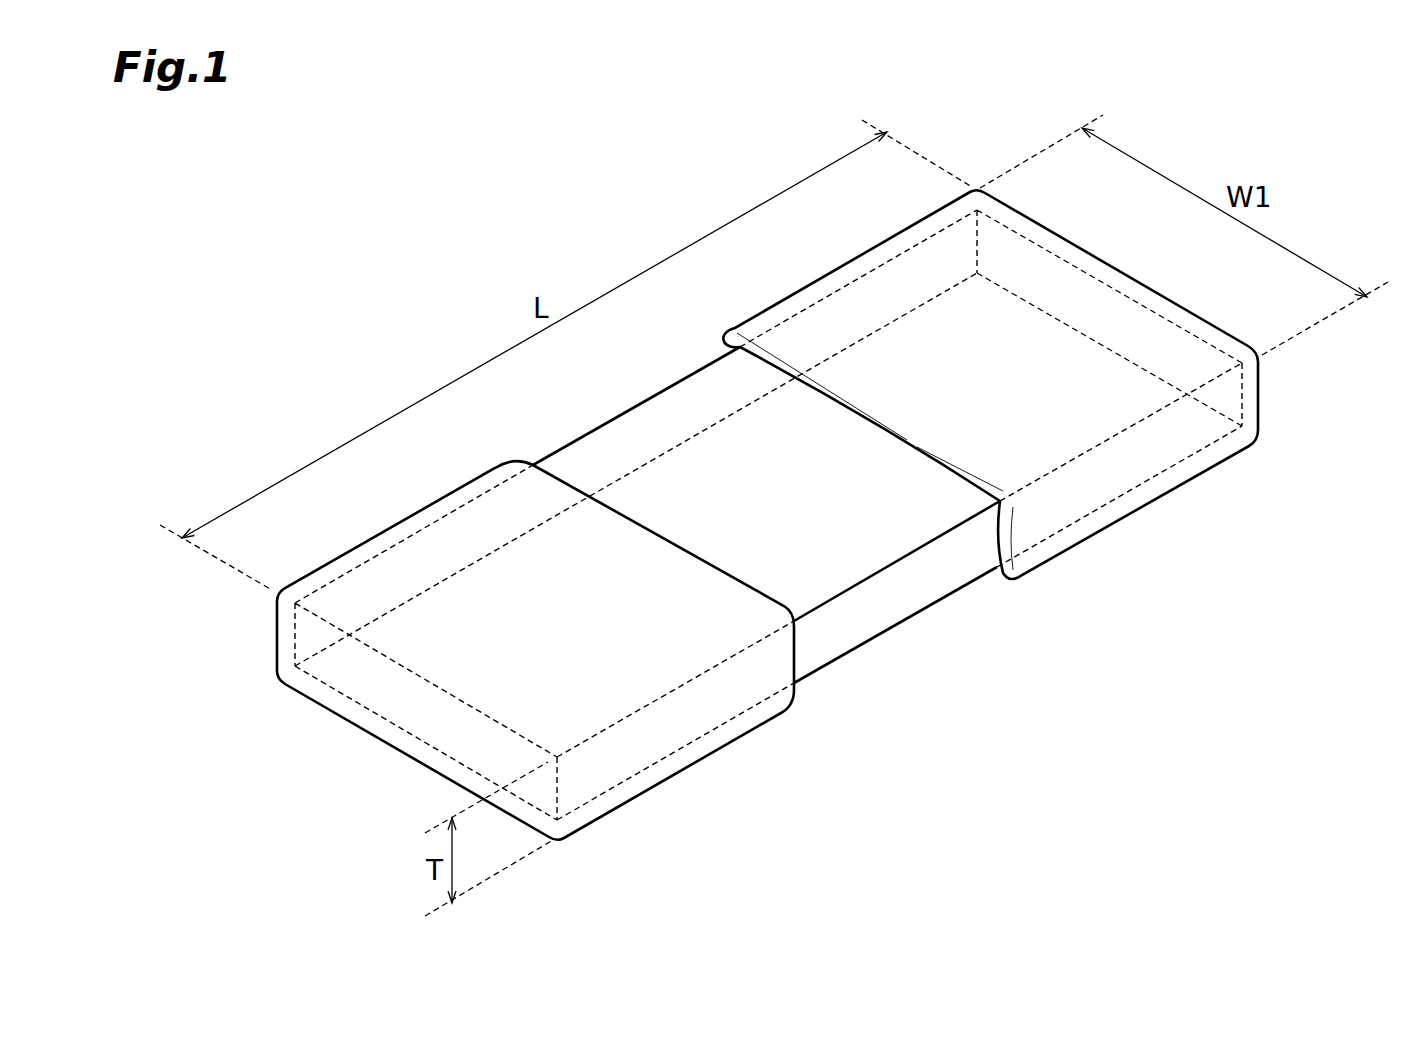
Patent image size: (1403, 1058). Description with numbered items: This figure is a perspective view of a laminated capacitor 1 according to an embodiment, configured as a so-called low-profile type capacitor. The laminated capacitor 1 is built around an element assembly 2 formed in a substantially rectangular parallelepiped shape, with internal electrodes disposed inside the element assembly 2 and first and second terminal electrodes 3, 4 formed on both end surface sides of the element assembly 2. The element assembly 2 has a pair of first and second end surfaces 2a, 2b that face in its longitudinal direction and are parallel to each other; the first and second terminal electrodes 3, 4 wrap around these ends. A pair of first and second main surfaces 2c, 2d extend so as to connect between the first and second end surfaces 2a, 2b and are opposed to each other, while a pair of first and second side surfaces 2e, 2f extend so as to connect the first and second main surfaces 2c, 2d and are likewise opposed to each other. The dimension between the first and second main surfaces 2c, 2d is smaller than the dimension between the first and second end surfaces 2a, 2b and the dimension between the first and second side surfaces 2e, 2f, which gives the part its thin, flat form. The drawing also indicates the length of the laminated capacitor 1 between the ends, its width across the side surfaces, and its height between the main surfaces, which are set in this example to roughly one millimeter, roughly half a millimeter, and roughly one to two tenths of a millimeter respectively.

The laminated capacitor 1 is at (439, 209).
The element assembly 2 is at (571, 443).
The first end surface 2a is at (420, 717).
The second end surface 2b is at (1135, 338).
The first main surface 2c is at (717, 403).
The second main surface 2d is at (902, 587).
The first side surface 2e is at (628, 443).
The second side surface 2f is at (843, 626).
The first terminal electrode 3 is at (279, 649).
The second terminal electrode 4 is at (1260, 404).